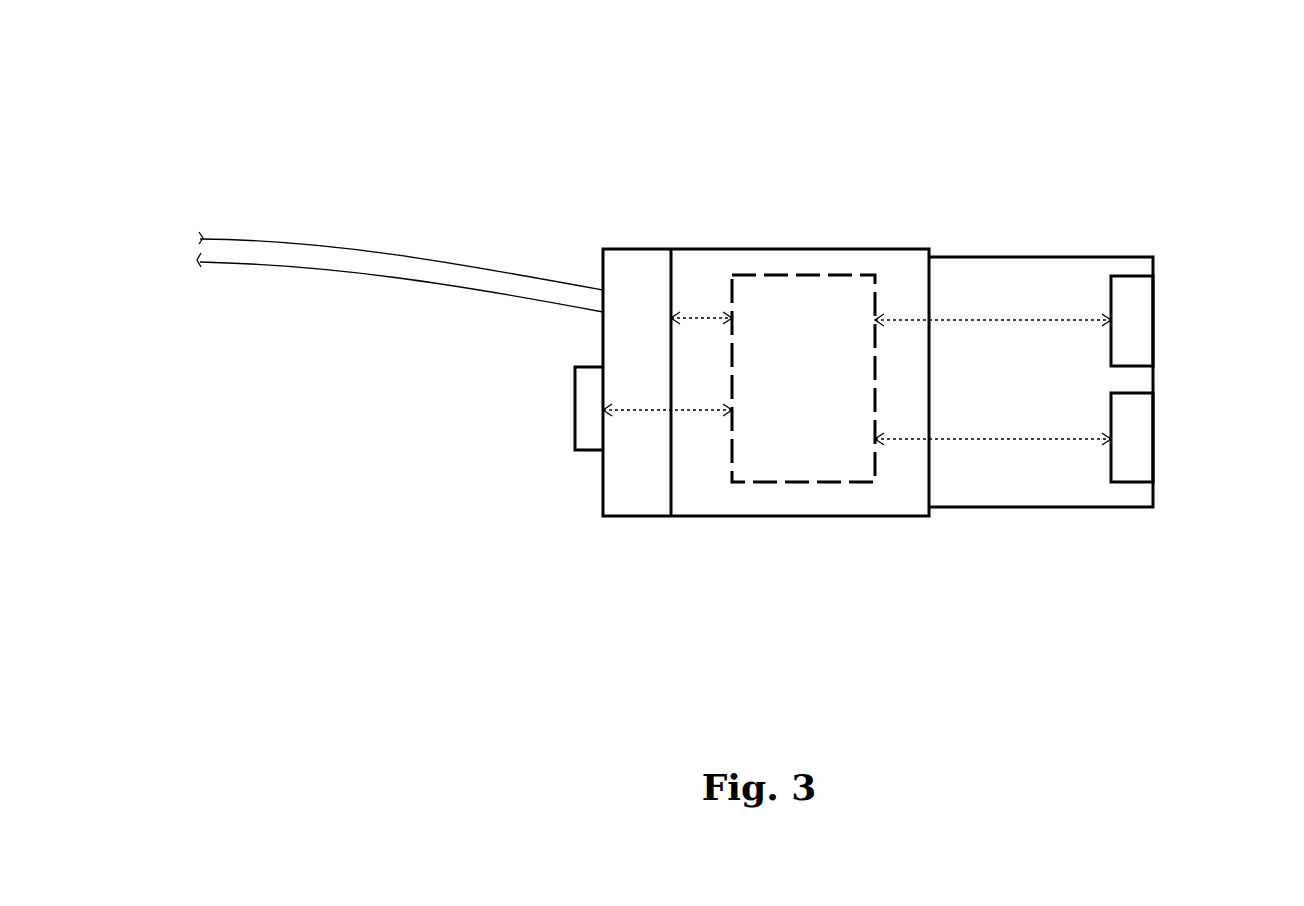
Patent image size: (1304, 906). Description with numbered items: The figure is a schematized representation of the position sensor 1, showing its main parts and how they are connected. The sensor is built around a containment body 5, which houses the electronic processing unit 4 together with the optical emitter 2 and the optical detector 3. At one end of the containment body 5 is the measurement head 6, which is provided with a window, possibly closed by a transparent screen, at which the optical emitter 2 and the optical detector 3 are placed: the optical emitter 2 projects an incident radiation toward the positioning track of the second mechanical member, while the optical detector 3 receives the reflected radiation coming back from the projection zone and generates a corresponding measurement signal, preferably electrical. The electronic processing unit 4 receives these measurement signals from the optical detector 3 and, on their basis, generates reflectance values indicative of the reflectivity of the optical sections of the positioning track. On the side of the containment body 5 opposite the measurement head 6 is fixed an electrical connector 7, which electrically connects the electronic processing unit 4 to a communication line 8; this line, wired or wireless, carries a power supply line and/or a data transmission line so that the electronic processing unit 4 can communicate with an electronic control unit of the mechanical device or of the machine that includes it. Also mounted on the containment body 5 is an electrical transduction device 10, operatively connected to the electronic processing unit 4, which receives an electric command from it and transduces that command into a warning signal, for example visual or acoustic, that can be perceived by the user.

The position sensor 1 is at (338, 623).
The optical emitter 2 is at (1139, 295).
The optical detector 3 is at (1135, 463).
The electronic processing unit 4 is at (806, 322).
The containment body 5 is at (906, 502).
The measurement head 6 is at (1082, 250).
The electrical connector 7 is at (631, 278).
The communication line 8 is at (330, 258).
The electrical transduction device 10 is at (573, 428).